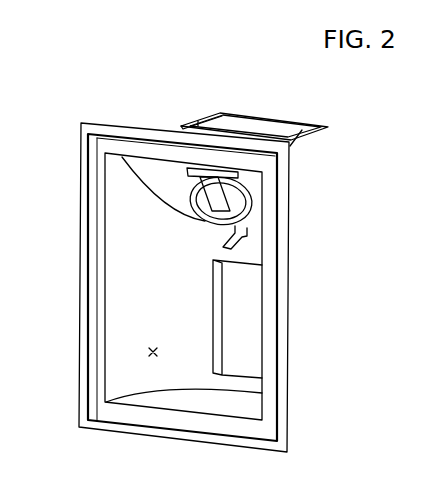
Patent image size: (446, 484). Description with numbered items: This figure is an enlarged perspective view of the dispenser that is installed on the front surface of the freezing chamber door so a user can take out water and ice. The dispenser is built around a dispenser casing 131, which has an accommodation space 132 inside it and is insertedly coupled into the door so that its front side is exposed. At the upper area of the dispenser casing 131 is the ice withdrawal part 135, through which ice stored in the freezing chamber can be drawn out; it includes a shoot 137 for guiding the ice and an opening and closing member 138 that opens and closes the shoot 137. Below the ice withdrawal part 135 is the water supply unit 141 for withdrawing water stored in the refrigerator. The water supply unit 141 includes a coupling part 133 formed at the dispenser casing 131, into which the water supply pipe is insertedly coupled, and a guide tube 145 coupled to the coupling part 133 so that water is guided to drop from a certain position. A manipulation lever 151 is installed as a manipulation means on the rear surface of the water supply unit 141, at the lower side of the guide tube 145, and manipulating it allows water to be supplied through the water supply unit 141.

The dispenser casing 131 is at (84, 140).
The accommodation space 132 is at (148, 352).
The coupling part 133 is at (250, 230).
The ice withdrawal part 135 is at (299, 162).
The shoot 137 is at (292, 143).
The opening and closing member 138 is at (240, 212).
The water supply unit 141 is at (302, 216).
The guide tube 145 is at (245, 248).
The manipulation lever 151 is at (235, 298).